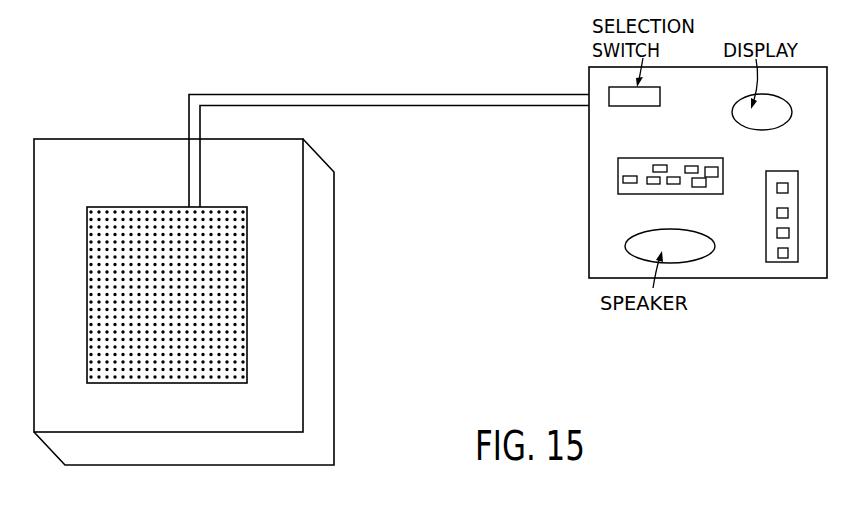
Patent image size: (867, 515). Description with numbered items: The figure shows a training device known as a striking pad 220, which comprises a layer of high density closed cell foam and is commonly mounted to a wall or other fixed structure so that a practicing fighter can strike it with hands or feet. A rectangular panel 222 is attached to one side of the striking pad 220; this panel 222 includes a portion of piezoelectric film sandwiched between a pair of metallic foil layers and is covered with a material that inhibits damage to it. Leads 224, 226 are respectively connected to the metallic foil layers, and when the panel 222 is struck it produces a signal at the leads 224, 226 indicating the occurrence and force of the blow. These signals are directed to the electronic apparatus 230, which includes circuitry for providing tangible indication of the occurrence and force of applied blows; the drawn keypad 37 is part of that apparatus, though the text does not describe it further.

The striking pad 220 is at (327, 250).
The rectangular panel 222 is at (214, 384).
The lead 224 is at (397, 107).
The lead 226 is at (403, 93).
The keypad 37 is at (618, 170).
The electronic apparatus 230 is at (771, 279).